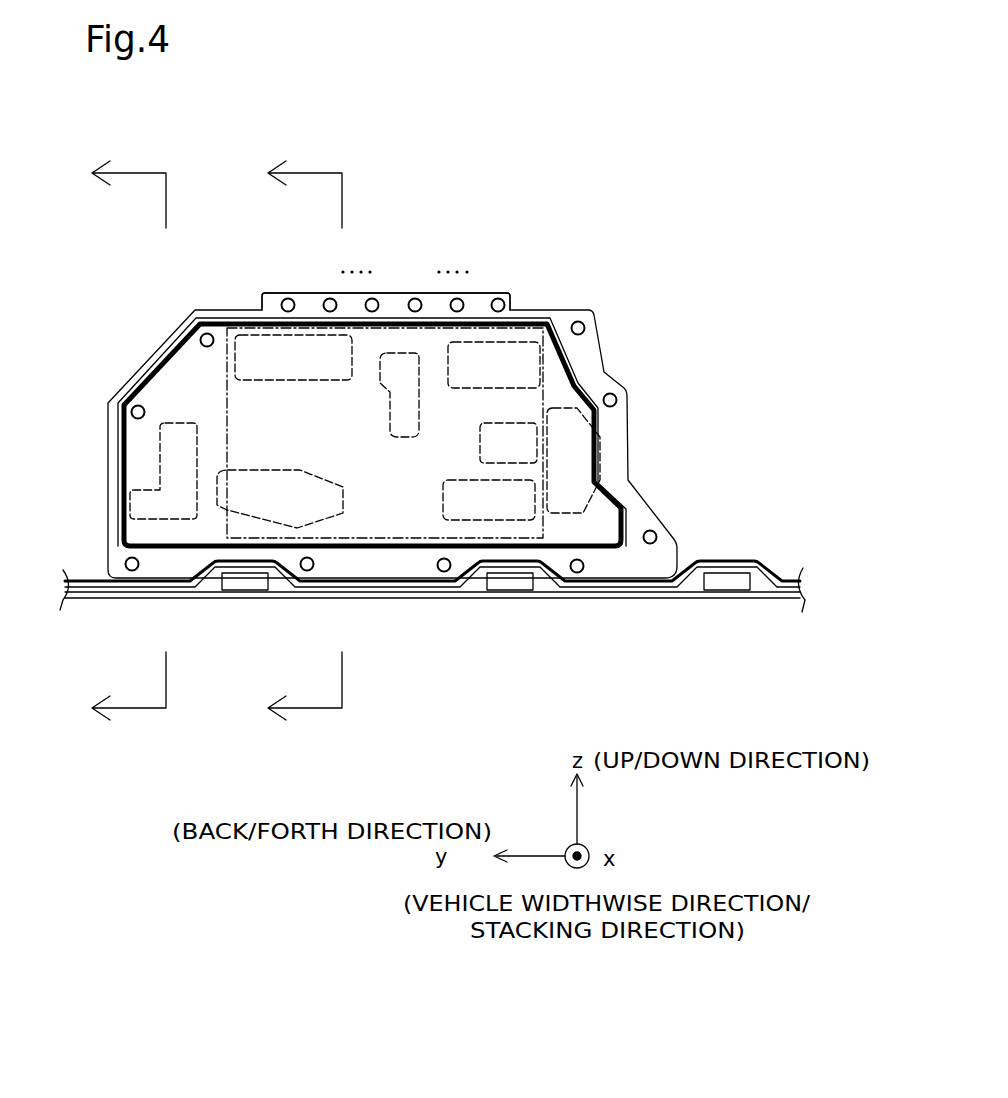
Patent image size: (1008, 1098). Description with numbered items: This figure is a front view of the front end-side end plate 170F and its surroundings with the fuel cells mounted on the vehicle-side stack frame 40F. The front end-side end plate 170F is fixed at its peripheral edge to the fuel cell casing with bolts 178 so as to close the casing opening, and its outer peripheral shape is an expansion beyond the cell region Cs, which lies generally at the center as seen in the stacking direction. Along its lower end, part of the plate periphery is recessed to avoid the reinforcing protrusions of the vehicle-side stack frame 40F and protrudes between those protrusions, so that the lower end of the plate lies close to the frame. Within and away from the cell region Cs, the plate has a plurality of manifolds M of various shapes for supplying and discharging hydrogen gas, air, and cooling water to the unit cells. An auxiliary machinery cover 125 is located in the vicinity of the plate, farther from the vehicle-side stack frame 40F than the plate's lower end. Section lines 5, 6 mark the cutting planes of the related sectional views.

The front end-side end plate 170F is at (567, 308).
The bolts 178 is at (417, 292).
The auxiliary machinery cover 125 is at (581, 384).
The manifolds M is at (610, 441).
The cell region Cs is at (395, 540).
The vehicle-side stack frame 40F is at (732, 560).
The section line V 5 is at (294, 442).
The section line VI 6 is at (118, 442).